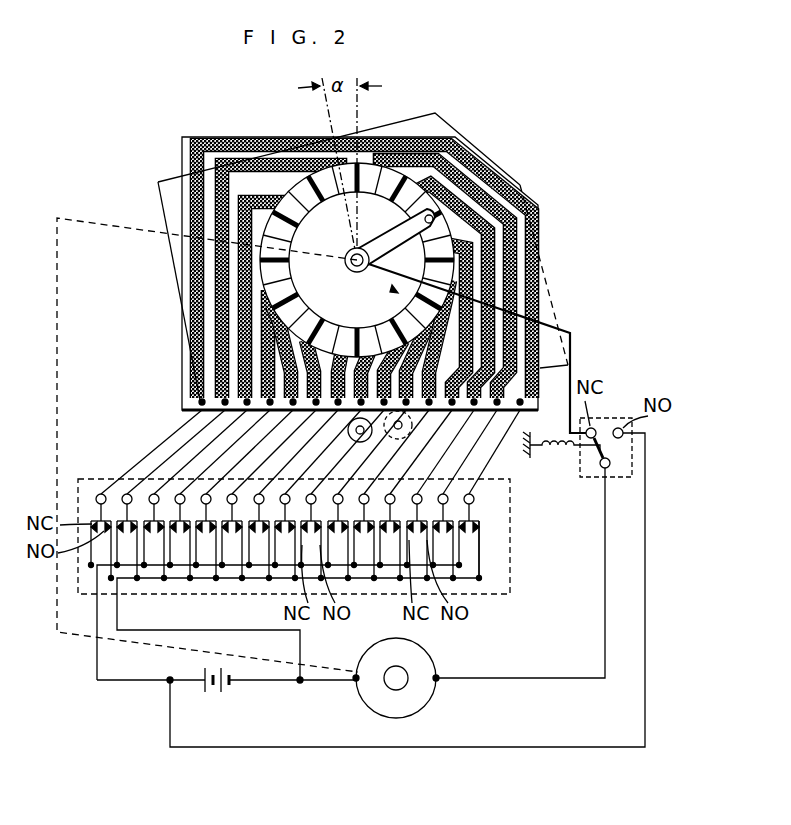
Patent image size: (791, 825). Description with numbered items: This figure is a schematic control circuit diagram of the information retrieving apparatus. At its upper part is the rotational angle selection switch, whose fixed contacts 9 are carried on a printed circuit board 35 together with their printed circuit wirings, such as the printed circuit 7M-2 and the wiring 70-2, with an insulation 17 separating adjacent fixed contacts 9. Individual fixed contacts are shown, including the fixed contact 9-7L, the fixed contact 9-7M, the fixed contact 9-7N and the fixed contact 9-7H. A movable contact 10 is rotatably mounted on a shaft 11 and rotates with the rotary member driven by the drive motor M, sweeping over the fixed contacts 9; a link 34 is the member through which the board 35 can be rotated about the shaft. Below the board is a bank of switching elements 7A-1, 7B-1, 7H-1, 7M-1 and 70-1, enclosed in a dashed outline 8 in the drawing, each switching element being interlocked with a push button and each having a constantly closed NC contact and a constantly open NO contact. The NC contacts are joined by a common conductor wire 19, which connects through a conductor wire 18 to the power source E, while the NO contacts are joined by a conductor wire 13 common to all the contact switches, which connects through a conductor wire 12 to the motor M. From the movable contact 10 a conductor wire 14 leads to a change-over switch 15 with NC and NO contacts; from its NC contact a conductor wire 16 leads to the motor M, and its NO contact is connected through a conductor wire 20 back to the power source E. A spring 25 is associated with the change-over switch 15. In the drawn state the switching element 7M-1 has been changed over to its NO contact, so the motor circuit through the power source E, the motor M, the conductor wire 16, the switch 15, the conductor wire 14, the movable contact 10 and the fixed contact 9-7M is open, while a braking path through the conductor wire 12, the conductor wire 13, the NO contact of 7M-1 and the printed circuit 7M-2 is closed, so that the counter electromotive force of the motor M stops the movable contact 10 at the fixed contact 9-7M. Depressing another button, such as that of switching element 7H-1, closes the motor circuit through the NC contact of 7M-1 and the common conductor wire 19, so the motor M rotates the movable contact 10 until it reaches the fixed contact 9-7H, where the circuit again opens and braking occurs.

The fixed contacts 9 is at (396, 150).
The printed circuit board 35 is at (183, 160).
The fixed contact 9-7N is at (433, 158).
The insulation 17 is at (455, 150).
The printed circuit 7M-2 is at (443, 250).
The fixed contact 9-7H is at (360, 337).
The printed circuit wiring 70-2 is at (536, 268).
The fixed contact 9-7L is at (516, 212).
The fixed contact 9-7M is at (485, 176).
The conductor wire 14 is at (573, 342).
The movable contact 10 is at (394, 236).
The shaft 11 is at (345, 265).
The conductor wire 12 is at (255, 631).
The link 34 is at (420, 441).
The switch assembly 8 is at (510, 594).
The switching element 7A-1 is at (98, 497).
The switching element 7B-1 is at (124, 495).
The switching element 7H-1 is at (283, 505).
The switching element 7M-1 is at (419, 508).
The switching element 70-1 is at (471, 506).
The common conductor wire 19 is at (97, 566).
The conductor wire 13 is at (345, 578).
The conductor wire 18 is at (130, 681).
The power source E is at (279, 691).
The drive motor M is at (363, 690).
The conductor wire 16 is at (550, 678).
The conductor wire 20 is at (540, 748).
The change-over switch 15 is at (598, 426).
The spring 25 is at (548, 450).